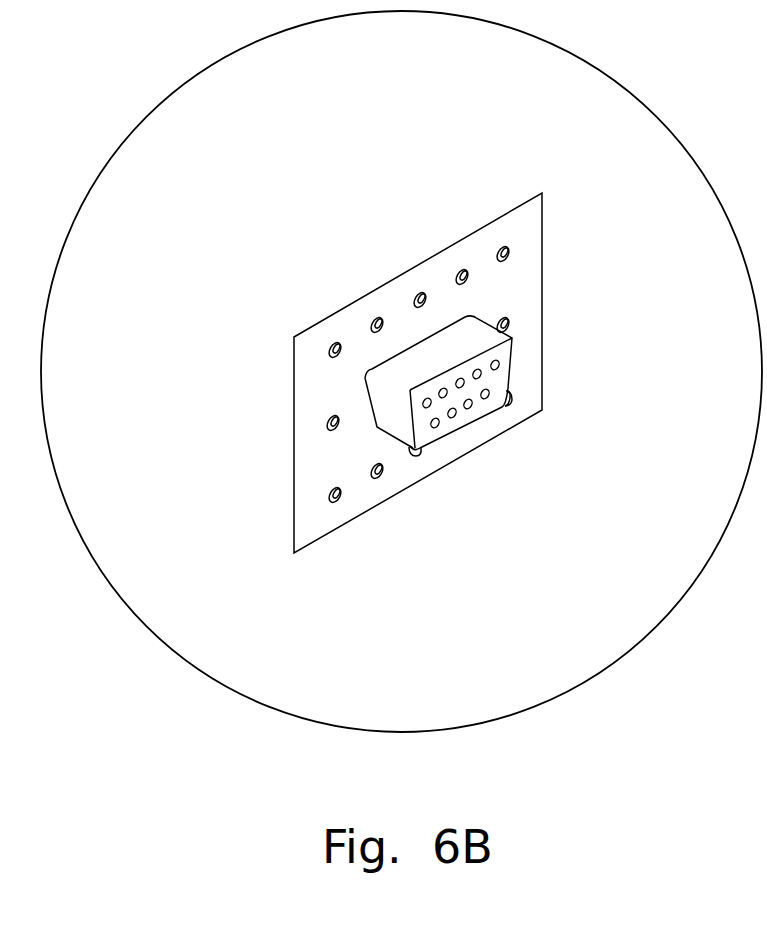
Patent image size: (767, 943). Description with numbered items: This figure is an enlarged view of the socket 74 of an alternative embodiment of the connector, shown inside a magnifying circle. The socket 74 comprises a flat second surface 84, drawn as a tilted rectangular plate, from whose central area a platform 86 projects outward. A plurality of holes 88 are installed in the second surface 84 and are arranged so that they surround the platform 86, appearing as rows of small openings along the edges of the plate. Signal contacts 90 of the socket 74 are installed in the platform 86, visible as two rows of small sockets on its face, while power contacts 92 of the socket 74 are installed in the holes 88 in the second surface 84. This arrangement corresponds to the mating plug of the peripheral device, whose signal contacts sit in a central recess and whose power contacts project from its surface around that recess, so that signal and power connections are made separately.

The socket 74 is at (248, 493).
The second surface 84 is at (525, 287).
The platform 86 is at (445, 353).
The holes 88 is at (327, 428).
The signal contacts 90 is at (499, 365).
The power contacts 92 is at (370, 320).